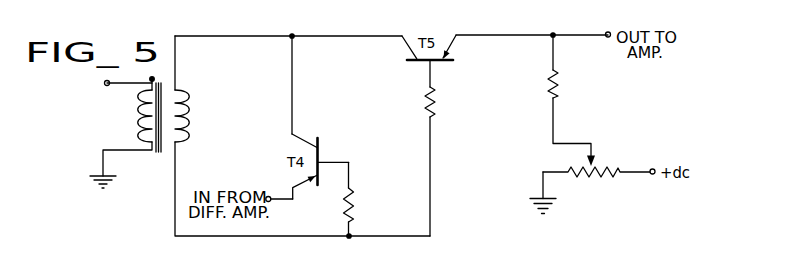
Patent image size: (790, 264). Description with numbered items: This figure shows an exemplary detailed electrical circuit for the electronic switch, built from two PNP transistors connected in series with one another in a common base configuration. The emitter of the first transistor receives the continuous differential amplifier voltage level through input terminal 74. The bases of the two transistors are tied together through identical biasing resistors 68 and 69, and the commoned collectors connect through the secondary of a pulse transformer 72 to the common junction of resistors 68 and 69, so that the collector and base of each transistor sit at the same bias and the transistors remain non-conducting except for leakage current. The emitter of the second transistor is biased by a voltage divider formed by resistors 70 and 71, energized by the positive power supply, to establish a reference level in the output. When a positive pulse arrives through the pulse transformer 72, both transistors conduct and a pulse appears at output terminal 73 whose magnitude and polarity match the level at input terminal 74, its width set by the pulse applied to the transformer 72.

The pulse transformer 72 is at (137, 117).
The input terminal 74 is at (268, 196).
The biasing resistor 68 is at (353, 203).
The biasing resistor 69 is at (435, 97).
The resistor 70 is at (560, 95).
The resistor 71 is at (598, 163).
The output terminal 73 is at (606, 32).